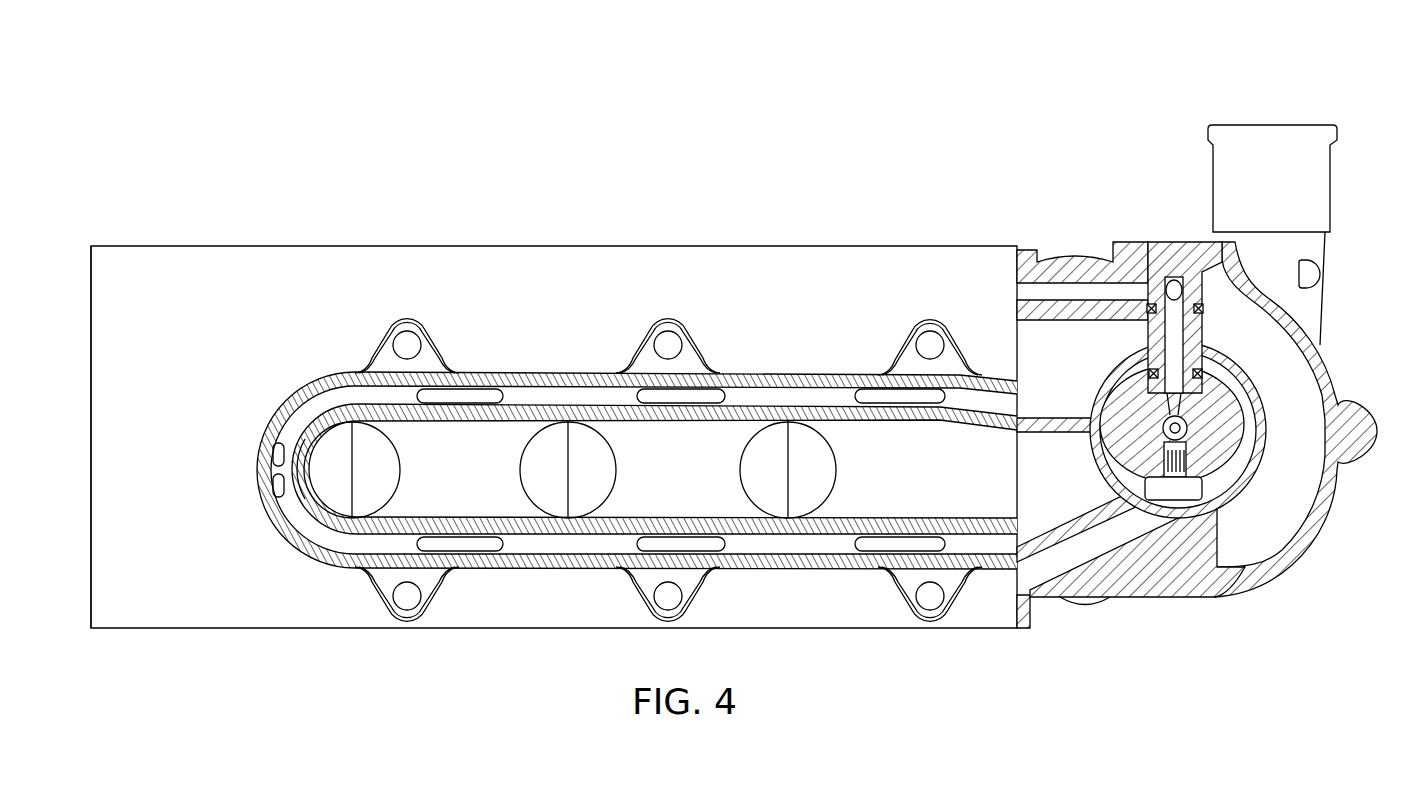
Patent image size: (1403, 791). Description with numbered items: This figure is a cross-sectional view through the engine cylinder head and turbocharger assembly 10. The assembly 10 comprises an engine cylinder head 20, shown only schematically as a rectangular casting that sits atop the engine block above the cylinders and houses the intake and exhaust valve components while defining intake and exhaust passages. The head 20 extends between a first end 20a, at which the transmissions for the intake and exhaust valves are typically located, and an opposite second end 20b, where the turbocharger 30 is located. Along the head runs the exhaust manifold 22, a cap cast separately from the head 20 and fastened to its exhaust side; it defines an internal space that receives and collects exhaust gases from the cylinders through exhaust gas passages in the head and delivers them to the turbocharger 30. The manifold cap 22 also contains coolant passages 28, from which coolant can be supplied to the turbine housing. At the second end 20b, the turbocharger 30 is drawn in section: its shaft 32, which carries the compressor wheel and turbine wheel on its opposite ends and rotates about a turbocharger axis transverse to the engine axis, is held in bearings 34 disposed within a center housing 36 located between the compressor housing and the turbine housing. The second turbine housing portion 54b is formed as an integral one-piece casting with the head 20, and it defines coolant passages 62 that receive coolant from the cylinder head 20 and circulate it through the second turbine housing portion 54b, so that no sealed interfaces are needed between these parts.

The engine cylinder head and turbocharger assembly 10 is at (389, 209).
The engine cylinder head 20 is at (302, 260).
The first end 20a is at (90, 604).
The second end 20b is at (1035, 603).
The exhaust manifold 22 is at (297, 547).
The coolant passages 28 is at (772, 397).
The turbocharger 30 is at (1172, 222).
The shaft 32 is at (1190, 430).
The bearings 34 is at (1157, 408).
The center housing 36 is at (1213, 408).
The second turbine housing portion 54b is at (1165, 582).
The coolant passages 62 is at (1253, 517).